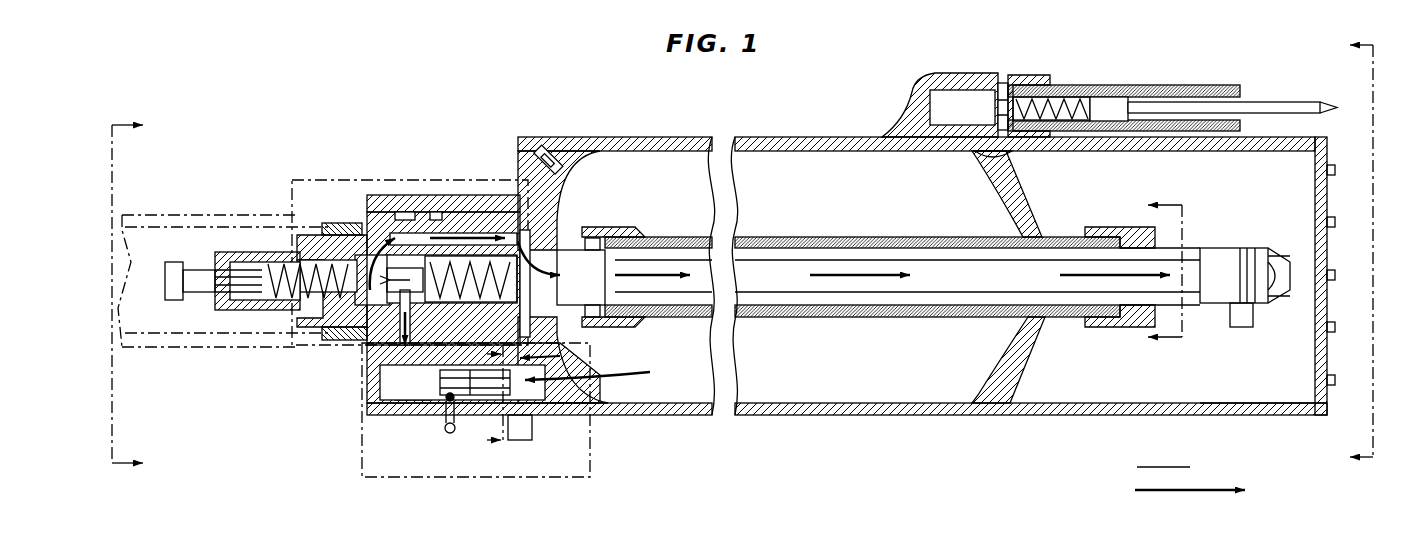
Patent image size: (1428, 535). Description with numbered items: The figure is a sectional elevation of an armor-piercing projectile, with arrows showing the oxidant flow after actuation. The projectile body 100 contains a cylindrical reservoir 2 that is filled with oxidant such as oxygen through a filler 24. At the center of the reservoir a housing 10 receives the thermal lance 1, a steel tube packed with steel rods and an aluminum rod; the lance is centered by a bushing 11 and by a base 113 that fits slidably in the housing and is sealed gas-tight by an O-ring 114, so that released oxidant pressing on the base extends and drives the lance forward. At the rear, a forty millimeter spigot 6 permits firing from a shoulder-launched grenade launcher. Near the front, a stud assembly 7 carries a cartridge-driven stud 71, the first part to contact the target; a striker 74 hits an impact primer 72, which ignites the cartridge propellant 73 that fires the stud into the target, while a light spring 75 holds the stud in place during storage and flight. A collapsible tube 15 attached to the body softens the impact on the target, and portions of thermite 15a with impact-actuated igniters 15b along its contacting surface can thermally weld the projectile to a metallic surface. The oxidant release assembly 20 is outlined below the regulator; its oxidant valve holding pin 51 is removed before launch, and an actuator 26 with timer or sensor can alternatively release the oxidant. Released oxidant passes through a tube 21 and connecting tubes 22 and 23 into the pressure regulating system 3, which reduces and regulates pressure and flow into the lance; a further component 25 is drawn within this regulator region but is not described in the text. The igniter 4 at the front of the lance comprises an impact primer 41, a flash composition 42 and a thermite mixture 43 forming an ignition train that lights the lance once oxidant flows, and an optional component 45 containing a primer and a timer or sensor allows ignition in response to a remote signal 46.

The projectile body 100 is at (645, 105).
The thermal lance 1 is at (955, 292).
The cylindrical reservoir 2 is at (842, 438).
The pressure regulating system 3 is at (335, 180).
The igniter 4 is at (1255, 305).
The spigot 6 is at (283, 345).
The stud assembly 7 is at (1062, 75).
The housing 10 is at (885, 237).
The bushing 11 is at (1098, 227).
The collapsible tube 15 is at (1240, 388).
The thermite 15a is at (1335, 222).
The impact-actuated igniter 15b is at (1335, 170).
The oxidant release assembly 20 is at (362, 447).
The tube 21 is at (548, 420).
The connecting tube 22 is at (390, 378).
The connecting tube 23 is at (362, 345).
The filler 24 is at (560, 140).
The regulator body 25 is at (455, 193).
The actuator 26 is at (525, 440).
The impact primer 41 is at (1268, 248).
The flash composition 42 is at (1247, 248).
The thermite mixture 43 is at (1240, 248).
The timer/remote-actuated igniter component 45 is at (1245, 327).
The remote signal 46 is at (1280, 315).
The oxidant valve holding pin 51 is at (445, 432).
The cartridge-driven stud 71 is at (1270, 102).
The impact primer 72 is at (1003, 85).
The cartridge propellant 73 is at (942, 100).
The striker 74 is at (1100, 100).
The light spring 75 is at (1030, 78).
The base 113 is at (625, 232).
The O-ring 114 is at (592, 240).